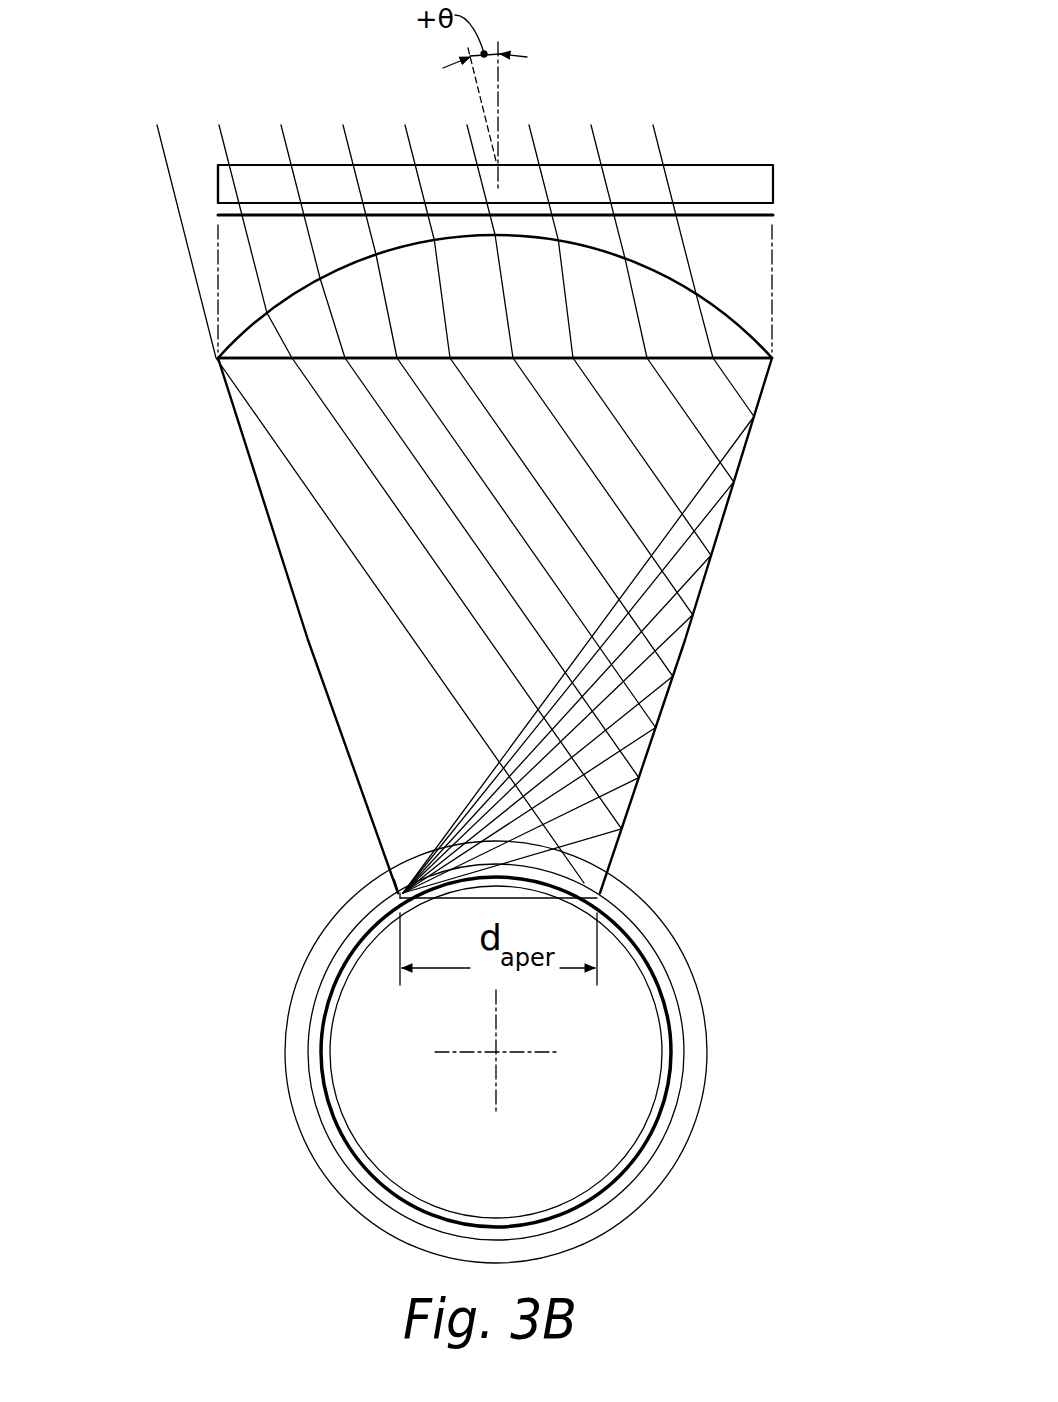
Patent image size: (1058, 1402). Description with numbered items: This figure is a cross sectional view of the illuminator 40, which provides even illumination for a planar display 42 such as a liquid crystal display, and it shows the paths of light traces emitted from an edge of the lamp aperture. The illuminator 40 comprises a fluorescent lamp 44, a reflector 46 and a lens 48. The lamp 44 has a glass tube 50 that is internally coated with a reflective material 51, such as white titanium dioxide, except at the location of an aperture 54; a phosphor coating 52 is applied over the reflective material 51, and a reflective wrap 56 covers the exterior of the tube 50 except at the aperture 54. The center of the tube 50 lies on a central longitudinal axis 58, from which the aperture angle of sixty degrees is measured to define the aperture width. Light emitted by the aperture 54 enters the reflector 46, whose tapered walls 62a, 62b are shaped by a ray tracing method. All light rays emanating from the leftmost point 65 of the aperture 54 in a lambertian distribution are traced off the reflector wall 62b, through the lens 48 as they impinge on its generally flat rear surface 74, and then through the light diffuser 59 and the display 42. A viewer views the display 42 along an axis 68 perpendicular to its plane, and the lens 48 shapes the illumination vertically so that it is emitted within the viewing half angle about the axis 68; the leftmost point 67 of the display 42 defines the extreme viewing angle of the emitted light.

The illuminator 40 is at (702, 821).
The planar display 42 is at (773, 188).
The fluorescent lamp 44 is at (511, 1052).
The reflector 46 is at (509, 625).
The lens 48 is at (262, 330).
The glass tube 50 is at (680, 1045).
The reflective material 51 is at (660, 985).
The phosphor coating 52 is at (645, 982).
The aperture 54 is at (450, 912).
The reflective wrap 56 is at (670, 1147).
The central longitudinal axis 58 is at (498, 1052).
The light diffuser 59 is at (773, 236).
The reflector wall 62a is at (312, 637).
The reflector wall 62b is at (656, 718).
The leftmost point of the aperture 65 is at (393, 876).
The leftmost point of the display 67 is at (214, 170).
The viewing axis 68 is at (498, 85).
The rear surface of the lens 74 is at (306, 364).